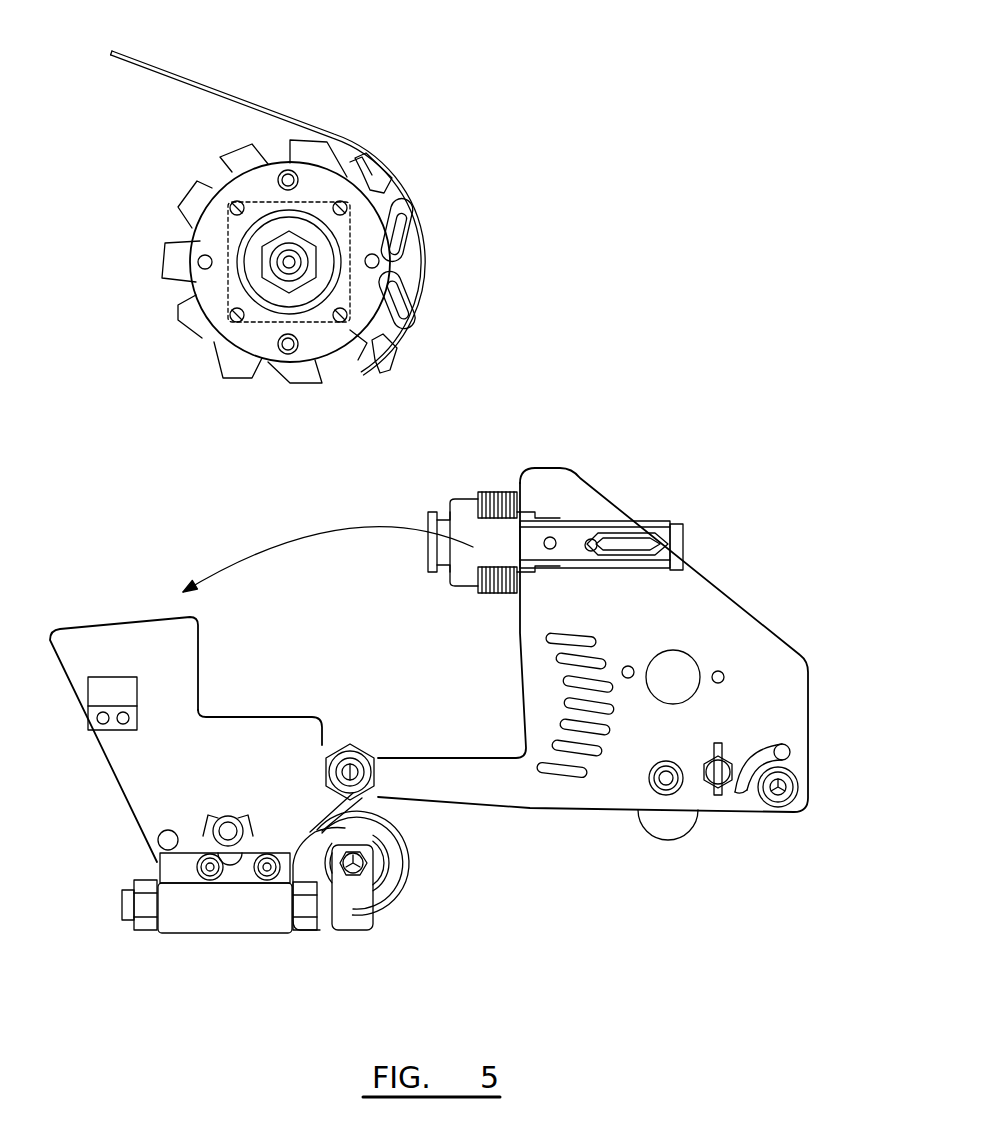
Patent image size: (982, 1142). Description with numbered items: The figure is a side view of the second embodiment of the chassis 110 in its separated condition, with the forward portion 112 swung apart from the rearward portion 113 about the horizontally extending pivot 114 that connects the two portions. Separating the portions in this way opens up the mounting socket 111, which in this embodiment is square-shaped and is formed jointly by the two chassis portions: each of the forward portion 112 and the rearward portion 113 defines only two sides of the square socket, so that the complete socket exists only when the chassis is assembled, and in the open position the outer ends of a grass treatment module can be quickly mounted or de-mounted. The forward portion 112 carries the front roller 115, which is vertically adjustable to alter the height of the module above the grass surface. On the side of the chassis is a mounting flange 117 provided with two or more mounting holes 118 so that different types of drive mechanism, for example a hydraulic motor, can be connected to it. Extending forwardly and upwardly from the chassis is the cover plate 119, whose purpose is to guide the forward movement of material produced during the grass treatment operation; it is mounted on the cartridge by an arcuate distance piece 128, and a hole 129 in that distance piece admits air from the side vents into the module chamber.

The chassis 110 is at (737, 600).
The mounting socket 111 is at (200, 667).
The forward chassis portion 112 is at (138, 792).
The rearward chassis portion 113 is at (685, 603).
The pivot 114 is at (378, 768).
The front roller 115 is at (400, 888).
The mounting flange 117 is at (210, 235).
The mounting hole 118 is at (374, 253).
The cover plate 119 is at (203, 83).
The arcuate distance piece 128 is at (418, 267).
The hole 129 is at (404, 263).